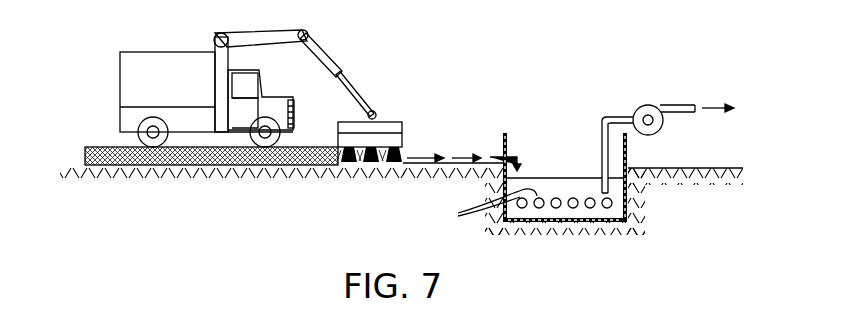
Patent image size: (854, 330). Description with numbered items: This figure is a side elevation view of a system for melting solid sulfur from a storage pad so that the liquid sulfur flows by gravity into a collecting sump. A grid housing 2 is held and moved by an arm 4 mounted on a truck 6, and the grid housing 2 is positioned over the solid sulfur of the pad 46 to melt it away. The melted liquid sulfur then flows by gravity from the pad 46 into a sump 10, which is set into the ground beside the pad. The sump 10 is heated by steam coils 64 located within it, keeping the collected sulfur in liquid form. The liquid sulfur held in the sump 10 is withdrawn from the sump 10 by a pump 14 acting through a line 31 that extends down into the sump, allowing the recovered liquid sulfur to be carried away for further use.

The grid housing 2 is at (394, 122).
The arm 4 is at (250, 33).
The truck 6 is at (163, 52).
The sump 10 is at (628, 147).
The pump 14 is at (648, 107).
The line 31 is at (602, 147).
The pad 46 is at (101, 147).
The steam coils 64 is at (522, 210).